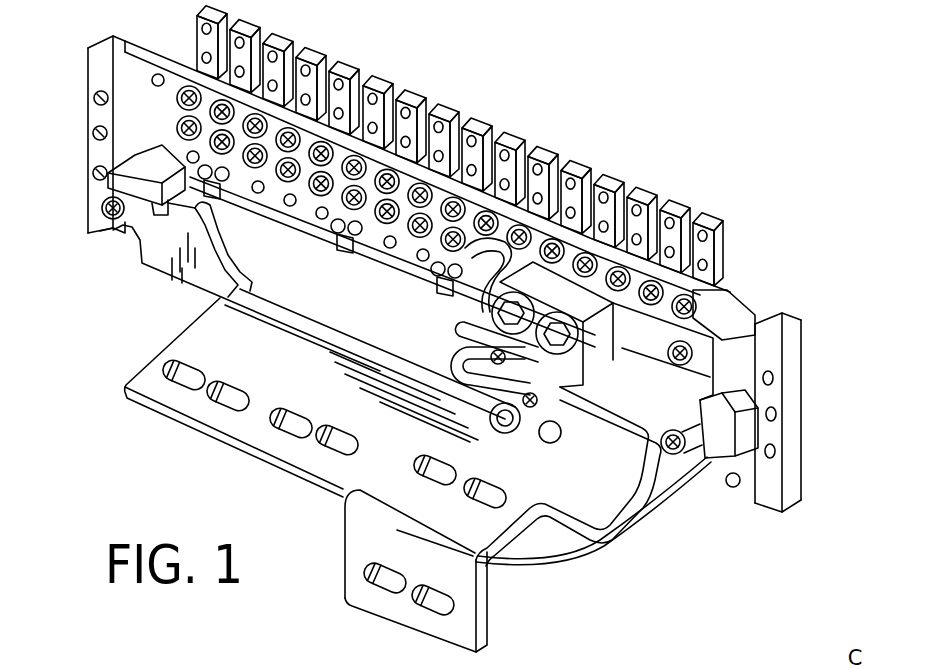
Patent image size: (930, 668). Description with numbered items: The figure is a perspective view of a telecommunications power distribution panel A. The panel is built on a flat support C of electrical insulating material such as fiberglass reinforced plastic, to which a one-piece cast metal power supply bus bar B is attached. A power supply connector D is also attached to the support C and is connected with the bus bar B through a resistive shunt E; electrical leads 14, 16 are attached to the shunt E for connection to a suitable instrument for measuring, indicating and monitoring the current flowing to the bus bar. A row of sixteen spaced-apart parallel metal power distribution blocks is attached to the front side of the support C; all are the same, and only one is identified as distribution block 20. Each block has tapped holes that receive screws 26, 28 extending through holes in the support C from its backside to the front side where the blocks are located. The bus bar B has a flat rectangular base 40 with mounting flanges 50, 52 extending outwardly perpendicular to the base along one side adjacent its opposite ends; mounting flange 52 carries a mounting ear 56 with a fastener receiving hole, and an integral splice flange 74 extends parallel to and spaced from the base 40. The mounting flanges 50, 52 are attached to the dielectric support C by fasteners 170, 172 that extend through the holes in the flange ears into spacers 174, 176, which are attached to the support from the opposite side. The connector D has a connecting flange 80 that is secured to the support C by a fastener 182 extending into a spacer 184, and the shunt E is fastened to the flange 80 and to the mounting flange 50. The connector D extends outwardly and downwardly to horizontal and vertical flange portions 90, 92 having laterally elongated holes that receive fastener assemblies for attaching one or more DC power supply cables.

The electrical lead 14 is at (460, 323).
The electrical lead 16 is at (463, 358).
The power distribution block 20 is at (347, 62).
The screw 26 is at (290, 186).
The screw 28 is at (312, 182).
The base 40 is at (288, 305).
The mounting flange 50 is at (662, 480).
The mounting flange 52 is at (152, 234).
The mounting ear 56 is at (105, 200).
The splice flange 74 is at (198, 412).
The connecting flange 80 is at (633, 350).
The horizontal flange portion 90 is at (490, 517).
The vertical flange portion 92 is at (365, 598).
The fastener 170 is at (678, 455).
The fastener 172 is at (100, 222).
The spacer 174 is at (733, 423).
The spacer 176 is at (137, 152).
The fastener 182 is at (768, 337).
The spacer 184 is at (733, 303).
The telecommunications power distribution panel A is at (540, 121).
The power supply bus bar B is at (156, 283).
The support C is at (821, 477).
The power supply connector D is at (503, 596).
The resistive shunt E is at (553, 268).